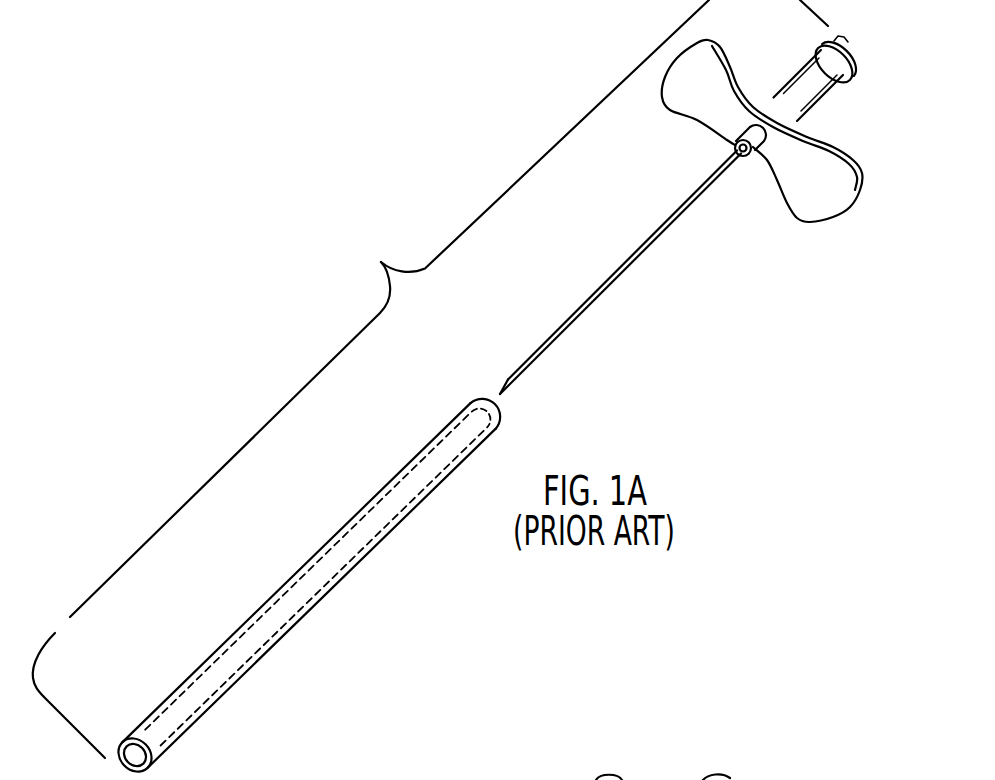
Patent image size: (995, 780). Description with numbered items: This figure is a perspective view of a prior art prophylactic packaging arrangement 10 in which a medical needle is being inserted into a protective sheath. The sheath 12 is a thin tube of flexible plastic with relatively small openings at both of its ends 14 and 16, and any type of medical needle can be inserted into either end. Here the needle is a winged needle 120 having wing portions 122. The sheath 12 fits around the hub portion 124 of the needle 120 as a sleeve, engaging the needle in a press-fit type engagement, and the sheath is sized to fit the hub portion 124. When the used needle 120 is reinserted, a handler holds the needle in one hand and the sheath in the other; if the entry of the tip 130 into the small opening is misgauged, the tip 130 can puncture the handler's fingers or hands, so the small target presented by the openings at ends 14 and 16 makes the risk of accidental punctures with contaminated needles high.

The package 10 is at (382, 263).
The packaging sheath 12 is at (403, 482).
The end 14 is at (482, 396).
The end 16 is at (136, 756).
The winged needle 120 is at (646, 242).
The wing portions 122 is at (793, 183).
The hub portion 124 is at (735, 147).
The tip 130 is at (500, 394).